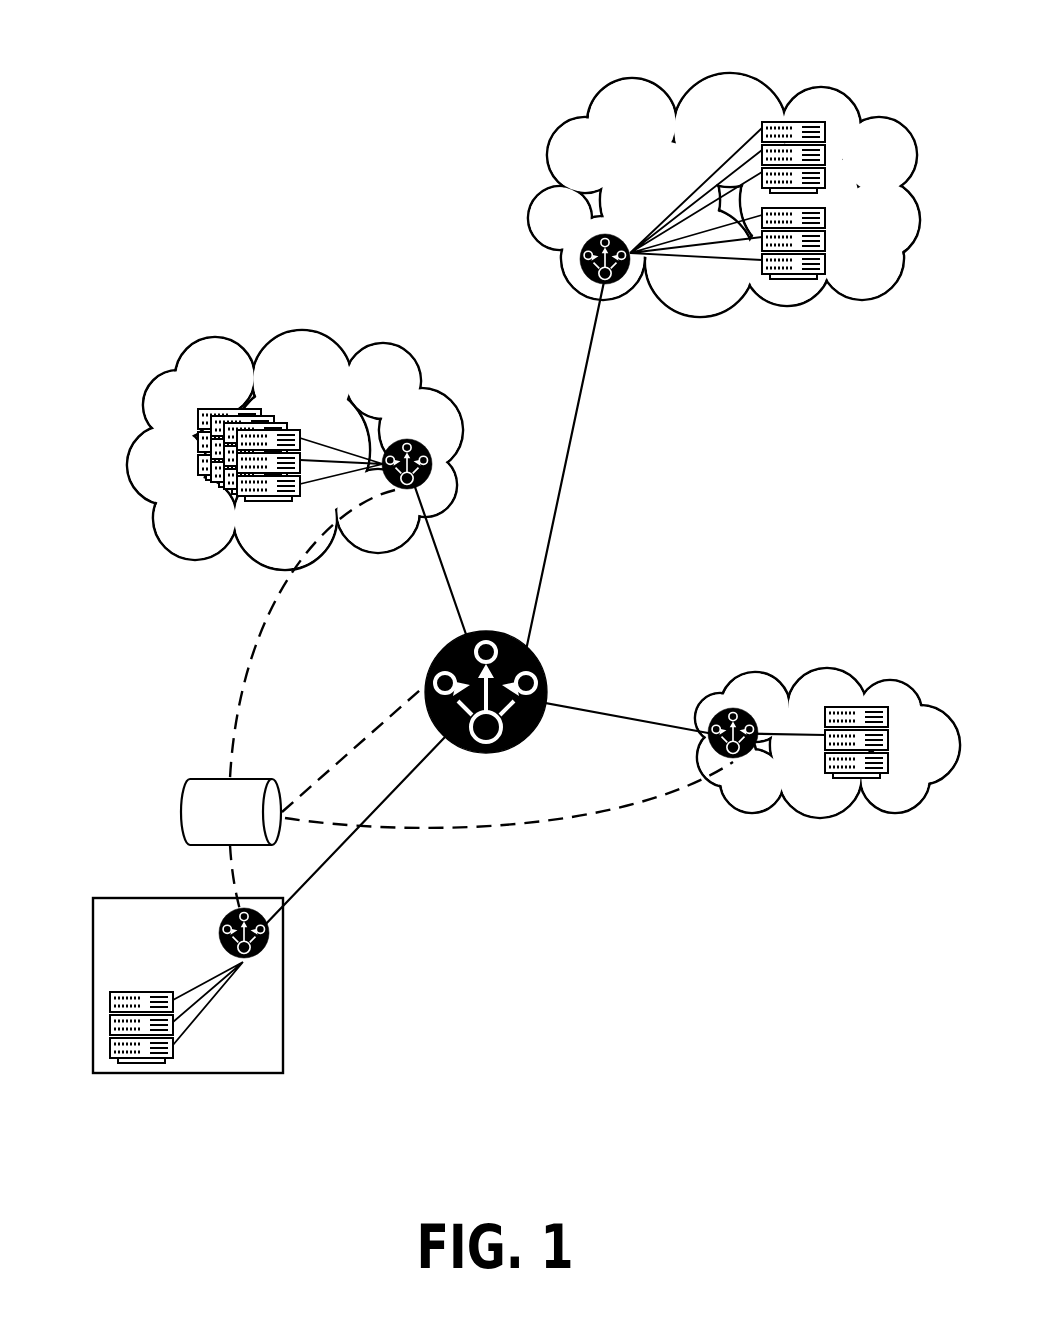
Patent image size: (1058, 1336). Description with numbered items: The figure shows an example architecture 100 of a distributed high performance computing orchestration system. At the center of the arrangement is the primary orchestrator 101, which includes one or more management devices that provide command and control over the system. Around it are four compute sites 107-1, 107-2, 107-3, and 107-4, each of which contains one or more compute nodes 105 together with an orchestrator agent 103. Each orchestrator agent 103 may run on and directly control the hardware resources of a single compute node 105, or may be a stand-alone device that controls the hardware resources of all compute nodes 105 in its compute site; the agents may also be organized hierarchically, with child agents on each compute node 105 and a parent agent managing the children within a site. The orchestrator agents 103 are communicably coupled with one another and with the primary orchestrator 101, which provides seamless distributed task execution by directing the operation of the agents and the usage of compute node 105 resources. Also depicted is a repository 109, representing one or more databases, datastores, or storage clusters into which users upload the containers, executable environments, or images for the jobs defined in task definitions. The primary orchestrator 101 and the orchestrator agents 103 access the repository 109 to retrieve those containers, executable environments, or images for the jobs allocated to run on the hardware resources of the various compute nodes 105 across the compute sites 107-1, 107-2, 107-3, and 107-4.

The architecture 100 is at (428, 52).
The primary orchestrator 101 is at (488, 754).
The orchestrator agent 103 is at (604, 232).
The compute node 105 is at (828, 186).
The compute site 107-1 is at (280, 1075).
The compute site 107-2 is at (810, 818).
The compute site 107-3 is at (173, 546).
The compute site 107-4 is at (718, 318).
The repository 109 is at (231, 812).